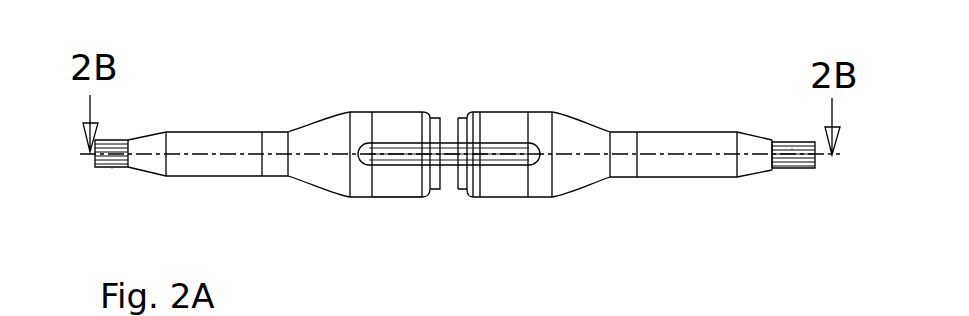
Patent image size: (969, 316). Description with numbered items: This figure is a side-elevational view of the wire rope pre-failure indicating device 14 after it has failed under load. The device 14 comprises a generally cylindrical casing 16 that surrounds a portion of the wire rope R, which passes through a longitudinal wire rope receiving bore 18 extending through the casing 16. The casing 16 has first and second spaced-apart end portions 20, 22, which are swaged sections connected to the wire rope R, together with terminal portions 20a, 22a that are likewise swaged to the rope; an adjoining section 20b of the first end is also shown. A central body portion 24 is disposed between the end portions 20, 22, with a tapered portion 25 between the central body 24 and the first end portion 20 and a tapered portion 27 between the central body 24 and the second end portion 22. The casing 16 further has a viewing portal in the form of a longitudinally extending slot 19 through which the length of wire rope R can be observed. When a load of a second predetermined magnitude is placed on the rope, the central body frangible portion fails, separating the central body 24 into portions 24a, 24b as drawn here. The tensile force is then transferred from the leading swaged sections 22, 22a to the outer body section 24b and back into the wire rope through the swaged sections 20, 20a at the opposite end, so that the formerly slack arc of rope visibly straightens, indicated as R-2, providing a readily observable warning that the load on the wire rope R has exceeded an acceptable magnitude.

The pre-failure indicating device 14 is at (502, 55).
The casing 16 is at (387, 199).
The wire rope receiving bore 18 is at (125, 170).
The longitudinally extending slot 19 is at (505, 157).
The first end portion 20 is at (208, 149).
The terminal portion 20a is at (147, 140).
The cylindrical section of first shaft portion 20b is at (198, 141).
The second end portion 22 is at (691, 154).
The terminal portion 22a is at (747, 177).
The central body portion 24 is at (457, 120).
The central portion of body 24a is at (388, 121).
The outer body section 24b is at (503, 109).
The tapered portion 25 is at (305, 131).
The tapered portion 27 is at (578, 132).
The wire rope R is at (112, 167).
The straightened portion of wire rope R-2 is at (447, 163).